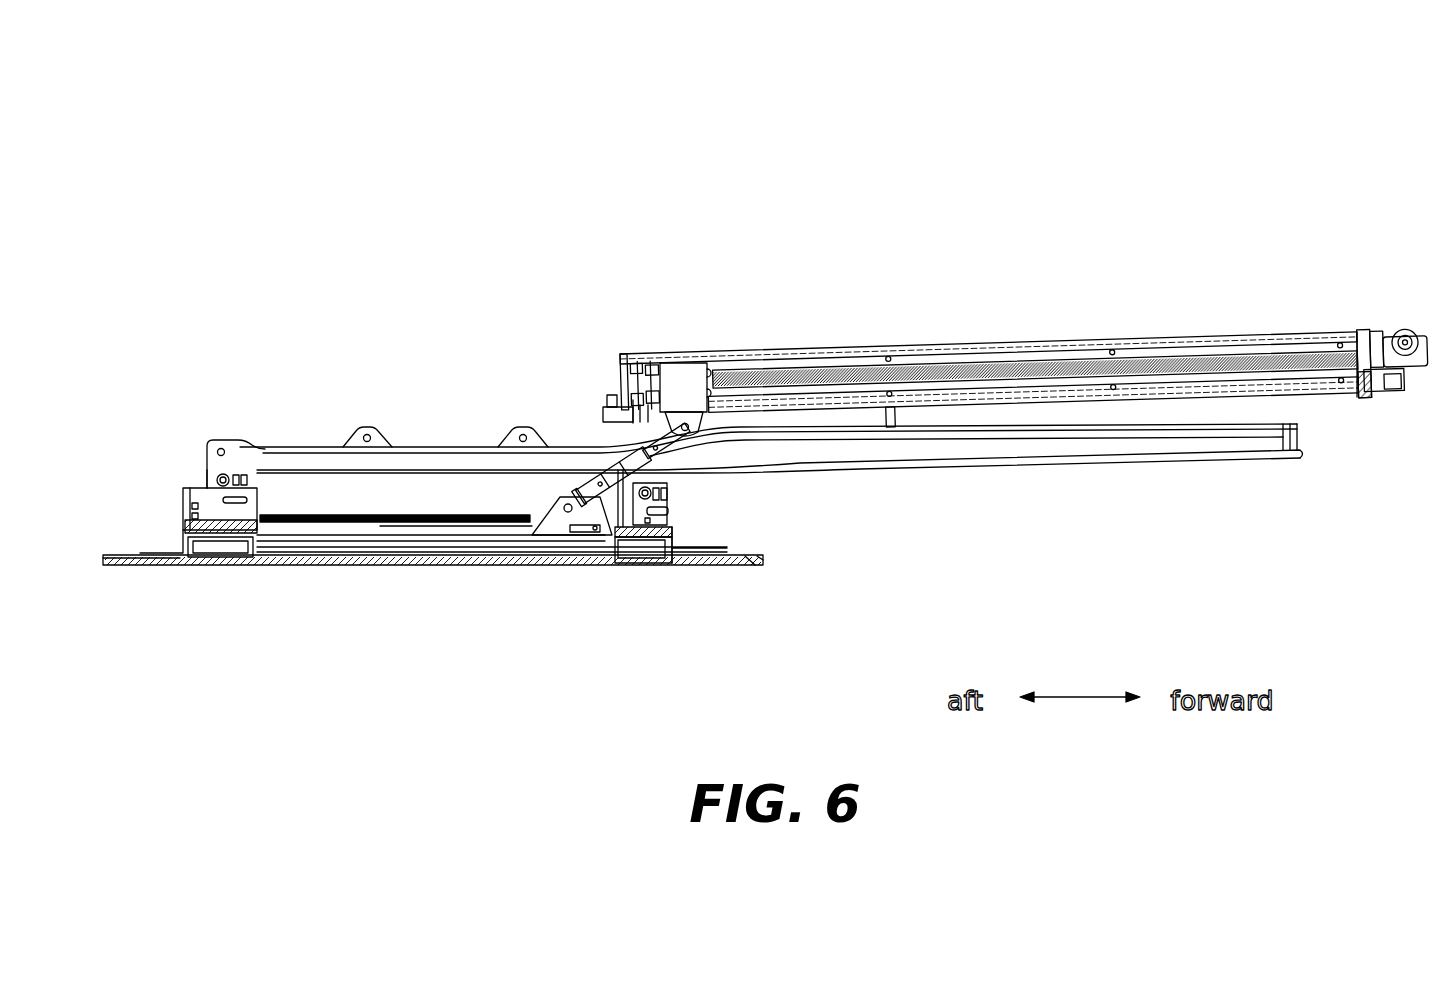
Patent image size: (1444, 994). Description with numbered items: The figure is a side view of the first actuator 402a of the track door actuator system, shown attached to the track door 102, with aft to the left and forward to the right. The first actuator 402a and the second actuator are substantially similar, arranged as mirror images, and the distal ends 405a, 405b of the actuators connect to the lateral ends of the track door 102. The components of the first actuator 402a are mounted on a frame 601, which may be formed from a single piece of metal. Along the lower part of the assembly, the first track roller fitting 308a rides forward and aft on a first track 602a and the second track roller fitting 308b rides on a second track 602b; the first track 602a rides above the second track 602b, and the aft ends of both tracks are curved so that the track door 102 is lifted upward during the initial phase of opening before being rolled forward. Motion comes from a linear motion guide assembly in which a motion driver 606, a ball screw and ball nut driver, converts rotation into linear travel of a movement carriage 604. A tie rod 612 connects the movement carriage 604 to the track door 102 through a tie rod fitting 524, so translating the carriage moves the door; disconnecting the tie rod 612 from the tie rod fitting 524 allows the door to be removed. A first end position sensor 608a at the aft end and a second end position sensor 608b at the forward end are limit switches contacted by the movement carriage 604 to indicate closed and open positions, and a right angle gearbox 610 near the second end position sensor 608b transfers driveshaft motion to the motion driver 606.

The track door 102 is at (432, 570).
The first track roller fitting 308a is at (190, 510).
The second track roller fitting 308b is at (655, 520).
The first actuator 402a is at (1011, 126).
The distal end of first actuator 405a is at (293, 408).
The distal end of second actuator 405b is at (1290, 305).
The tie rod fitting 524 is at (550, 505).
The frame 601 is at (975, 355).
The first track 602a is at (428, 466).
The second track 602b is at (1090, 440).
The movement carriage 604 is at (690, 380).
The motion driver 606 is at (820, 360).
The first end position sensor 608a is at (608, 410).
The second end position sensor 608b is at (1350, 388).
The right angle gearbox 610 is at (1408, 355).
The tie rod 612 is at (598, 540).